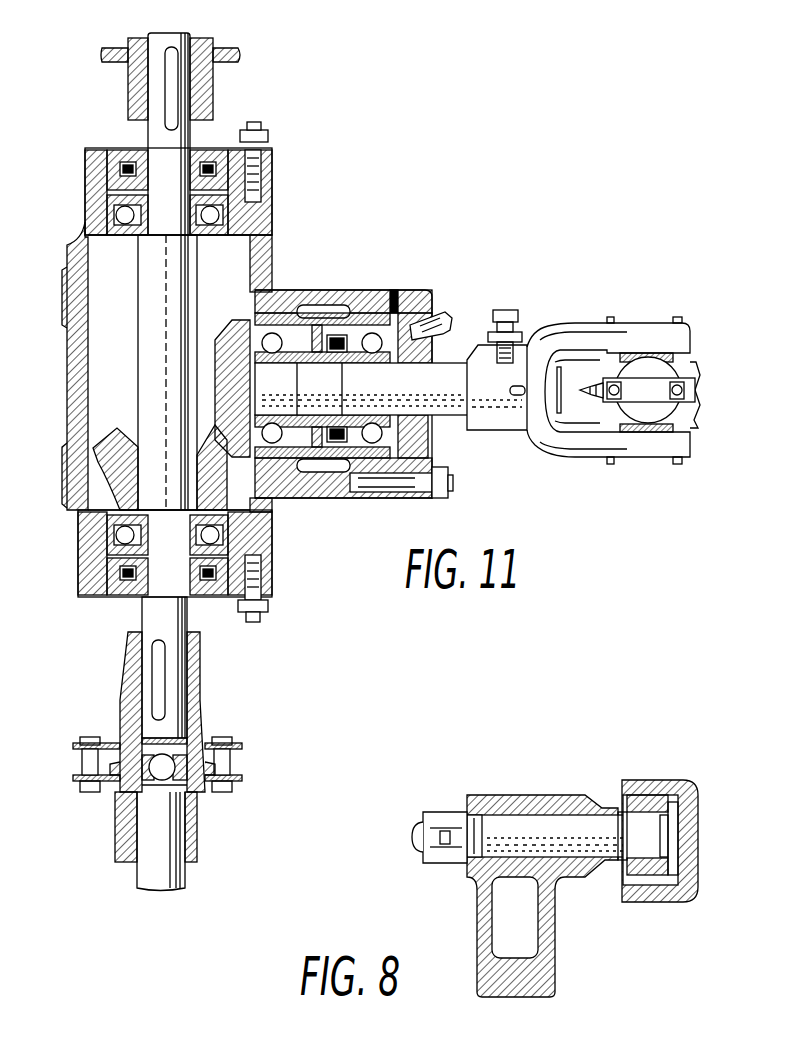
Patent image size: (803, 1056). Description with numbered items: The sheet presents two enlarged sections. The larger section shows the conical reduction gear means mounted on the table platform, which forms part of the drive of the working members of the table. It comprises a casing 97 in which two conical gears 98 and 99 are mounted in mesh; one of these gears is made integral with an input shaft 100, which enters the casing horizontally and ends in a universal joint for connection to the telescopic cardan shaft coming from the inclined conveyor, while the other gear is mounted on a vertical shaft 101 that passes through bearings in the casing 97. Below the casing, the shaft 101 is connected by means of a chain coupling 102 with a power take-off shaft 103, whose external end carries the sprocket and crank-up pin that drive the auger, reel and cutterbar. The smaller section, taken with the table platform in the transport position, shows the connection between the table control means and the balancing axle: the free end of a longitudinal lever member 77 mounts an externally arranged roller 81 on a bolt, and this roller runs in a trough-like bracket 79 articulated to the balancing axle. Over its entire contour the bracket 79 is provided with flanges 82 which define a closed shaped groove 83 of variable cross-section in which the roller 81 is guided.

In FIG. 11, the casing 97 is at (253, 222).
In FIG. 11, the conical gear 98 is at (232, 322).
In FIG. 11, the conical gear 99 is at (110, 445).
In FIG. 11, the input shaft 100 is at (462, 375).
In FIG. 11, the shaft 101 is at (150, 632).
In FIG. 11, the chain coupling 102 is at (240, 772).
In FIG. 11, the power take-off shaft 103 is at (155, 830).
In FIG. 8, the longitudinal lever member 77 is at (510, 905).
In FIG. 8, the trough-like bracket 79 is at (690, 792).
In FIG. 8, the roller 81 is at (665, 872).
In FIG. 8, the flange 82 is at (638, 792).
In FIG. 8, the shaped groove 83 is at (648, 876).